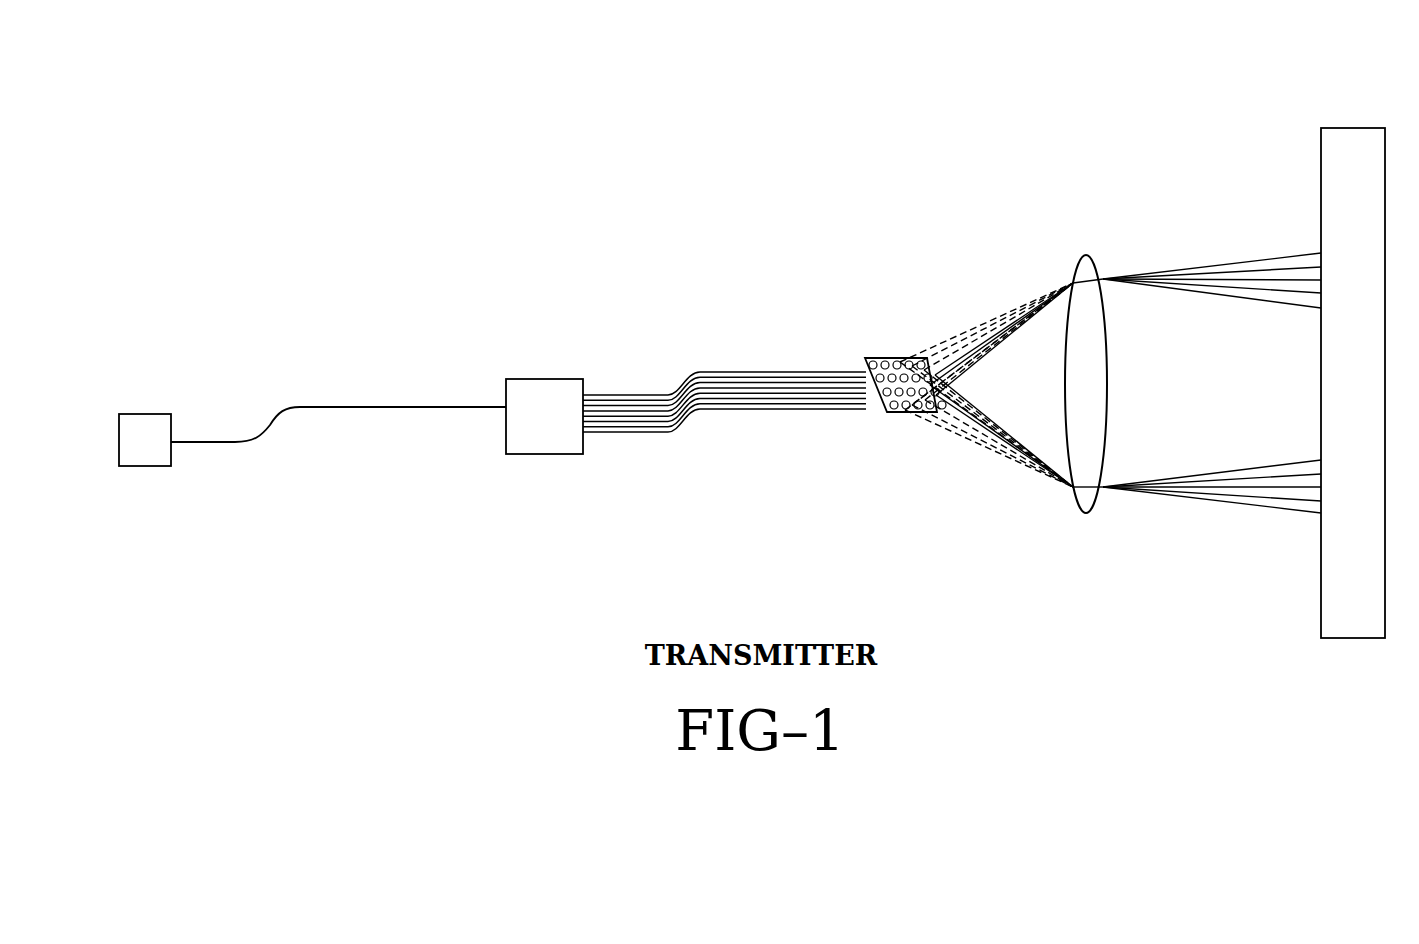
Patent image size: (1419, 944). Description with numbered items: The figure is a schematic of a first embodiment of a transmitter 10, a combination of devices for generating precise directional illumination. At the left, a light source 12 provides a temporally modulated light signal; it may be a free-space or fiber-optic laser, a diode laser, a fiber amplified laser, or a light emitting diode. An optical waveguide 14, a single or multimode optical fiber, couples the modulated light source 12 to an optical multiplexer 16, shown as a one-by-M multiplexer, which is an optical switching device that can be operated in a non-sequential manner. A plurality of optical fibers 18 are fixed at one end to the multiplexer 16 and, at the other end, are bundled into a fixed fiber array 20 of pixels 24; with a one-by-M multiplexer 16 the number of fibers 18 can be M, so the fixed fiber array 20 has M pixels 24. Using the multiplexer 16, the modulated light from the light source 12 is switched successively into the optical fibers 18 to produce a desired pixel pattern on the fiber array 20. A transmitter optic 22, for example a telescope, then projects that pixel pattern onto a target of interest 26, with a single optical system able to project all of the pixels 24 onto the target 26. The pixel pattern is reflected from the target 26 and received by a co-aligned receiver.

The transmitter 10 is at (197, 125).
The light source 12 is at (131, 456).
The optical waveguide 14 is at (330, 407).
The optical multiplexer 16 is at (529, 434).
The optical fibers 18 is at (627, 393).
The fixed fiber array 20 is at (893, 371).
The transmitter optic 22 is at (1075, 513).
The pixels 24 is at (892, 357).
The target of interest 26 is at (1338, 398).